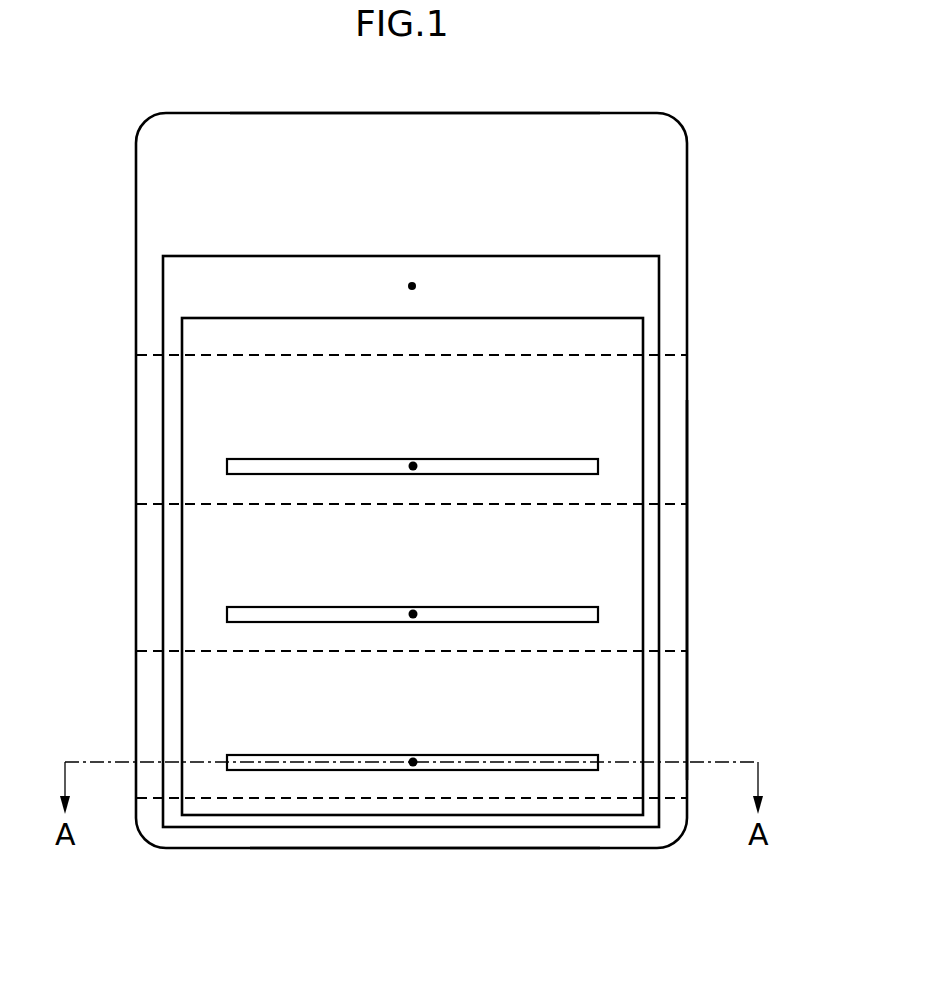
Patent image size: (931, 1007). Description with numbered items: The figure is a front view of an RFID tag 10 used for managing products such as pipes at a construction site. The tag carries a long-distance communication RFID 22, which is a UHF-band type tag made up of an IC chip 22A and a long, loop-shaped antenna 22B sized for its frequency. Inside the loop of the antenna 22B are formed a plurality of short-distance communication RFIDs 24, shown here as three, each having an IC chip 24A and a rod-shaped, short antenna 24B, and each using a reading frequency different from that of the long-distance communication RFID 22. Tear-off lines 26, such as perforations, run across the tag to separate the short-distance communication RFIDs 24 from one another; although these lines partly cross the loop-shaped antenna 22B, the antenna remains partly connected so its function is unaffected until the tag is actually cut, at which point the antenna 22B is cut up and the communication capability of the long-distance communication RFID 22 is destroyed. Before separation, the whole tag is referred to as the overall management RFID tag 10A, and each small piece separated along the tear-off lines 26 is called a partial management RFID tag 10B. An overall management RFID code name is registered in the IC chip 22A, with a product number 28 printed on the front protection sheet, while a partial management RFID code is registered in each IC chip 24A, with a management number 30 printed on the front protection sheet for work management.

The RFID tag 10 is at (660, 145).
The overall management RFID tag 10A is at (611, 140).
The partial management RFID tag 10B is at (675, 403).
The product number 28 is at (277, 146).
The long-distance communication RFID 22 is at (176, 281).
The IC chip 22A is at (412, 284).
The loop-shaped antenna 22B is at (176, 381).
The tear-off lines 26 is at (233, 506).
The management number 30 is at (332, 403).
The short-distance communication RFID 24 is at (537, 606).
The IC chip 24A is at (415, 468).
The short antenna 24B is at (595, 462).